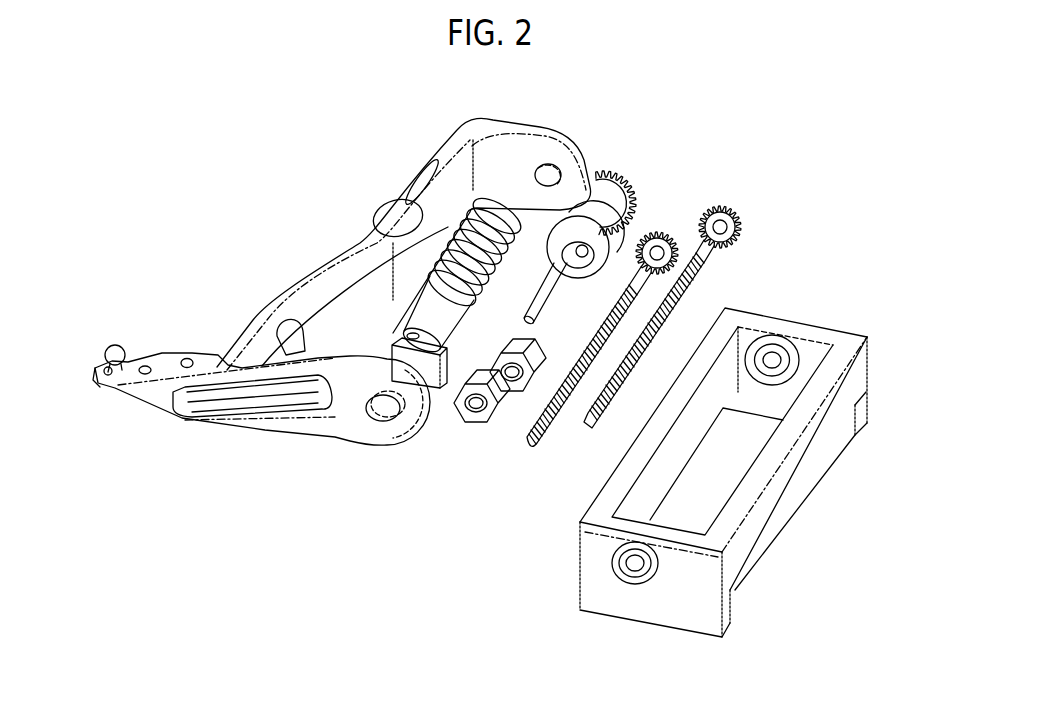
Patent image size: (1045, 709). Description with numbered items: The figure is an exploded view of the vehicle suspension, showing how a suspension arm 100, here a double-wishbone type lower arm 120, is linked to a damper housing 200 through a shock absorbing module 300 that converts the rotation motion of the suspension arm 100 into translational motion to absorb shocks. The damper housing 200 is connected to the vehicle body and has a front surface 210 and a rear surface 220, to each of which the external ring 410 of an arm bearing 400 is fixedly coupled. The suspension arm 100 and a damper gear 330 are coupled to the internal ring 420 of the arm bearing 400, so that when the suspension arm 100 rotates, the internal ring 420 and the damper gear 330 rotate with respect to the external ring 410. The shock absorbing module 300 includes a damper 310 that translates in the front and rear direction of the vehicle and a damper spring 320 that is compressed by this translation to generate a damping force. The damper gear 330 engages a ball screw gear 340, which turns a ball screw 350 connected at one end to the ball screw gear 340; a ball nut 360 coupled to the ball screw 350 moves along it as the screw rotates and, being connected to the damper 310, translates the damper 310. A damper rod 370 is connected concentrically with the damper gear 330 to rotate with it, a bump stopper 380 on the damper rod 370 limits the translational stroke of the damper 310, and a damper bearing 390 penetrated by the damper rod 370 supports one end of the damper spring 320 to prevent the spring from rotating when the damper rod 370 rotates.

The suspension arm 100 is at (258, 408).
The lower arm 120 is at (252, 396).
The damper housing 200 is at (767, 522).
The front surface 210 is at (817, 353).
The rear surface 220 is at (698, 625).
The shock absorbing module 300 is at (734, 204).
The damper 310 is at (410, 310).
The damper spring 320 is at (388, 216).
The damper gear 330 is at (578, 200).
The ball screw gear 340 is at (670, 240).
The ball screw 350 is at (607, 418).
The ball nut 360 is at (515, 395).
The damper rod 370 is at (553, 275).
The bump stopper 380 is at (575, 262).
The damper bearing 390 is at (638, 238).
The arm bearing 400 is at (820, 265).
The external ring 410 is at (760, 338).
The internal ring 420 is at (782, 354).